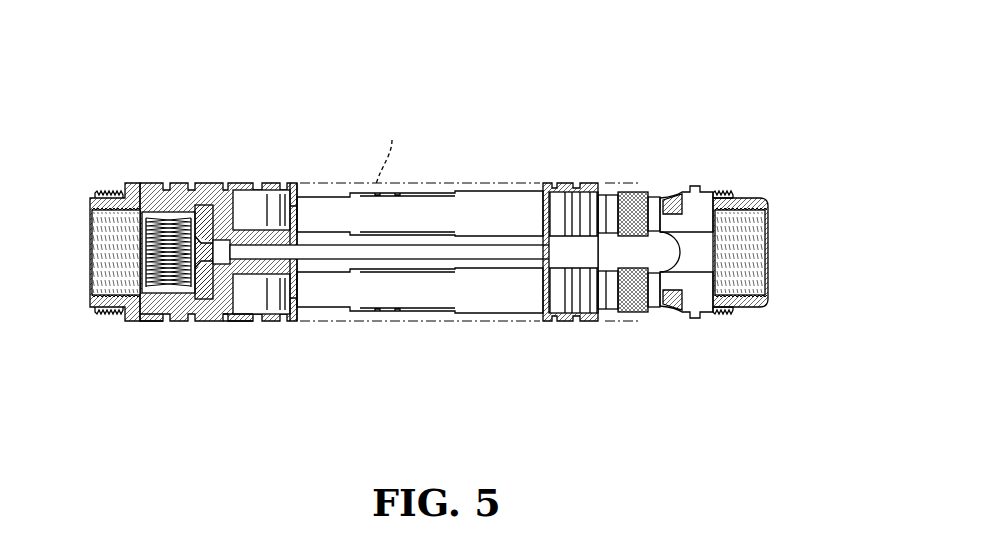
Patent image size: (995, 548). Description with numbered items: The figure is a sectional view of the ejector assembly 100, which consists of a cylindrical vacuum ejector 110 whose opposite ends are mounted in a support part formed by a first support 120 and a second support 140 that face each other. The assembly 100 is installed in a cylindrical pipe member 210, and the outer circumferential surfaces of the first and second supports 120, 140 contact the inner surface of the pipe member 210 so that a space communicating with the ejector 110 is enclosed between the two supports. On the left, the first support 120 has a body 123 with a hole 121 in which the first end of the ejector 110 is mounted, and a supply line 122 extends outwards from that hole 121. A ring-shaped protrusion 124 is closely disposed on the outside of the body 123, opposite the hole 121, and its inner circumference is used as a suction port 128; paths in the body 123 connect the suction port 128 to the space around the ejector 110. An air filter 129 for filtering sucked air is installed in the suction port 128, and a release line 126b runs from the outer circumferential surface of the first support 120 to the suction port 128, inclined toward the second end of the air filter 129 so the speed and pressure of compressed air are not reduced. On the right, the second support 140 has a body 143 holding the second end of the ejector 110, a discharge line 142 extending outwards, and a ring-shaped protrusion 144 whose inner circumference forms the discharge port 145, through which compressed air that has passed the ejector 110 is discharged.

The assembly 100 is at (538, 82).
The vacuum ejector 110 is at (421, 311).
The first support 120 is at (233, 170).
The hole 121 is at (301, 182).
The supply line 122 is at (264, 222).
The body 123 is at (232, 324).
The ring-shaped protrusion 124 is at (158, 326).
The release line 126b is at (207, 181).
The suction port 128 is at (88, 288).
The air filter 129 is at (133, 262).
The second support 140 is at (567, 173).
The discharge line 142 is at (714, 261).
The body 143 is at (568, 324).
The ring-shaped protrusion 144 is at (683, 318).
The discharge port 145 is at (762, 298).
The pipe member 210 is at (439, 172).